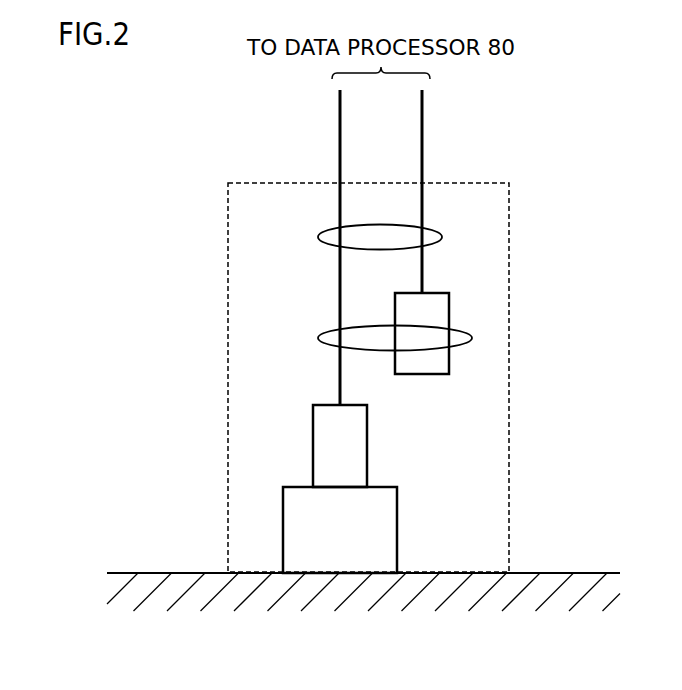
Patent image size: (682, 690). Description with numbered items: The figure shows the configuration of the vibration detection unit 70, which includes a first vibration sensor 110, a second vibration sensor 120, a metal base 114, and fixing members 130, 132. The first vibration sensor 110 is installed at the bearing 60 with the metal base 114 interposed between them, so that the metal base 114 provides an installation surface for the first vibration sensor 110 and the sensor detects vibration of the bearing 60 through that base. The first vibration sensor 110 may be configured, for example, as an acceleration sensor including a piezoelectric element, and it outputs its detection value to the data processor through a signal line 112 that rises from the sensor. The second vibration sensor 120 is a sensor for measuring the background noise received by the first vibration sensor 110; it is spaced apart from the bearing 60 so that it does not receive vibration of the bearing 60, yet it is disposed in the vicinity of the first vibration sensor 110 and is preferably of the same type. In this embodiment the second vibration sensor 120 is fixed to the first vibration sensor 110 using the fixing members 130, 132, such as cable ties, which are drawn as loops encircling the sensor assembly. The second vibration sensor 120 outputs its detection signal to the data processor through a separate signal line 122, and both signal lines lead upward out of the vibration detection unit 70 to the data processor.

The bearing 60 is at (567, 572).
The vibration detection unit 70 is at (228, 292).
The first vibration sensor 110 is at (313, 443).
The signal line 112 is at (340, 129).
The metal base 114 is at (283, 533).
The second vibration sensor 120 is at (449, 364).
The signal line 122 is at (422, 129).
The fixing member 130 is at (472, 338).
The fixing member 132 is at (443, 237).